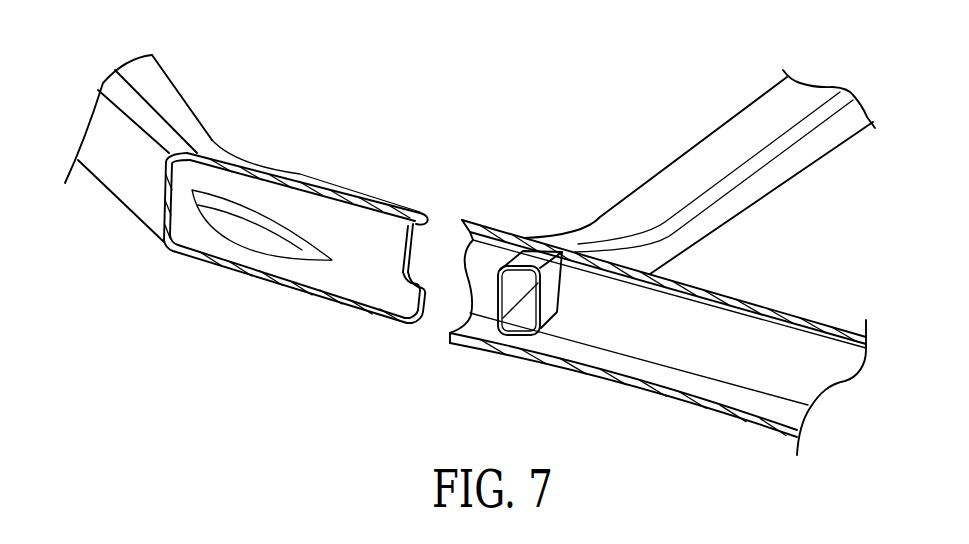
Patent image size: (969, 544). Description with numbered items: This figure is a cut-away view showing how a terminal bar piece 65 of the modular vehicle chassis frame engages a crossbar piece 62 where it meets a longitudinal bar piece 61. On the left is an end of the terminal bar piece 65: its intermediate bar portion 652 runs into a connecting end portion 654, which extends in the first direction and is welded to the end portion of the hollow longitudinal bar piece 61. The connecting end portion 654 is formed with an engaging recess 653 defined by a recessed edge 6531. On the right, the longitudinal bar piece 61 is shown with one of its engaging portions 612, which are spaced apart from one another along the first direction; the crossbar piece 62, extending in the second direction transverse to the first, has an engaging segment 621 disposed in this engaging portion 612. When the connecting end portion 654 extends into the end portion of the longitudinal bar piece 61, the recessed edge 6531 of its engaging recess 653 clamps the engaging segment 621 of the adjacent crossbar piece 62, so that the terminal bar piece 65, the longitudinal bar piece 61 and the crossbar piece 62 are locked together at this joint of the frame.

The longitudinal bar piece 61 is at (658, 275).
The engaging portion 612 is at (522, 217).
The engaging segment 621 is at (548, 303).
The crossbar piece 62 is at (710, 135).
The terminal bar piece 65 is at (306, 234).
The intermediate bar portion 652 is at (152, 197).
The engaging recess 653 is at (405, 256).
The recessed edge 6531 is at (415, 250).
The connecting end portion 654 is at (333, 190).